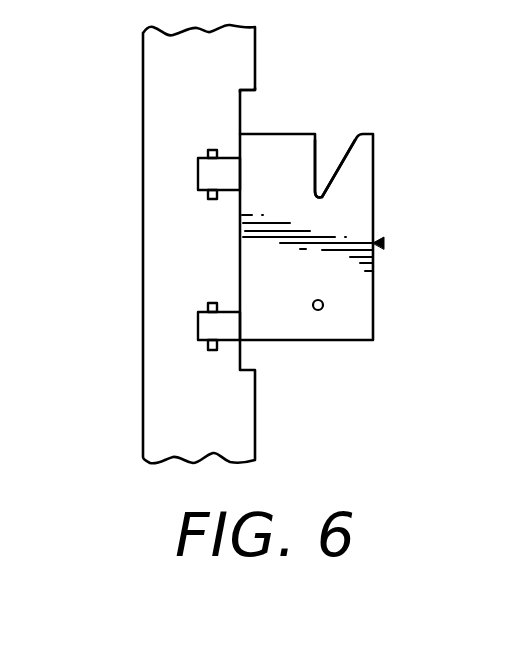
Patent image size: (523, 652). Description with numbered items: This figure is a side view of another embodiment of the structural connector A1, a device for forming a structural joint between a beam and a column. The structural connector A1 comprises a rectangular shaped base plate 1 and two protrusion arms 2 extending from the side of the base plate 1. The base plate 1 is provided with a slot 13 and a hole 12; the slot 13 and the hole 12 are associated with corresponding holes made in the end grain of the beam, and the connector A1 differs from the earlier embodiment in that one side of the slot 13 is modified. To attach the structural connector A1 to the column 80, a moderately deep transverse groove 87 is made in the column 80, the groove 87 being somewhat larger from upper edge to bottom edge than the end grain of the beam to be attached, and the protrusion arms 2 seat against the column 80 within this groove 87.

The column 80 is at (158, 88).
The transverse groove 87 is at (244, 105).
The base plate 1 is at (348, 210).
The slot 13 is at (338, 160).
The structural connector A1 is at (380, 245).
The hole 12 is at (323, 305).
The protrusion arms 2 is at (205, 176).